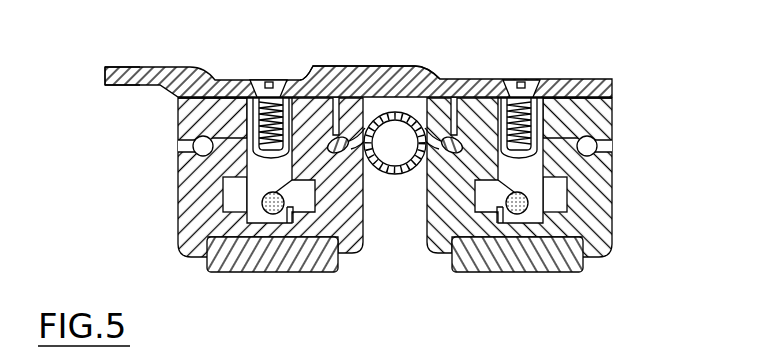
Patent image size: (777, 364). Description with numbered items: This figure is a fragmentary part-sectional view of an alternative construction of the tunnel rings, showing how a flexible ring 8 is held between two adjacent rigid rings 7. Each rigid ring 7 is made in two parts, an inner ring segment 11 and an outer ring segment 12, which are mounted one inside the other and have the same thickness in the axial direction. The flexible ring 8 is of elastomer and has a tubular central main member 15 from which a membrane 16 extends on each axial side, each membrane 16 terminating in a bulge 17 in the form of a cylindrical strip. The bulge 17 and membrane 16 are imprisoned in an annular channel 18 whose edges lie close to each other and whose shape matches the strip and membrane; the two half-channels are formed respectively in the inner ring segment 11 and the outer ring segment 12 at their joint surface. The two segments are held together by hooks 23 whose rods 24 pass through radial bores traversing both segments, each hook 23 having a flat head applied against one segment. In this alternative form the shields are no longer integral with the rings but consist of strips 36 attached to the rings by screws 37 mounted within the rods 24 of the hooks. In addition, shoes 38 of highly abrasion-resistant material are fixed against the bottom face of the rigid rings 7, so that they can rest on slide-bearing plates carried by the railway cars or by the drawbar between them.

The rigid ring 7 is at (205, 70).
The flexible ring 8 is at (413, 99).
The inner ring segment 11 is at (177, 243).
The outer ring segment 12 is at (192, 78).
The central main member 15 is at (390, 111).
The membrane 16 is at (356, 128).
The bulge 17 is at (345, 133).
The annular channel 18 is at (192, 156).
The hook 23 is at (296, 238).
The rod of the hook 24 is at (250, 165).
The strip 36 is at (128, 66).
The screw 37 is at (260, 82).
The shoe 38 is at (243, 268).